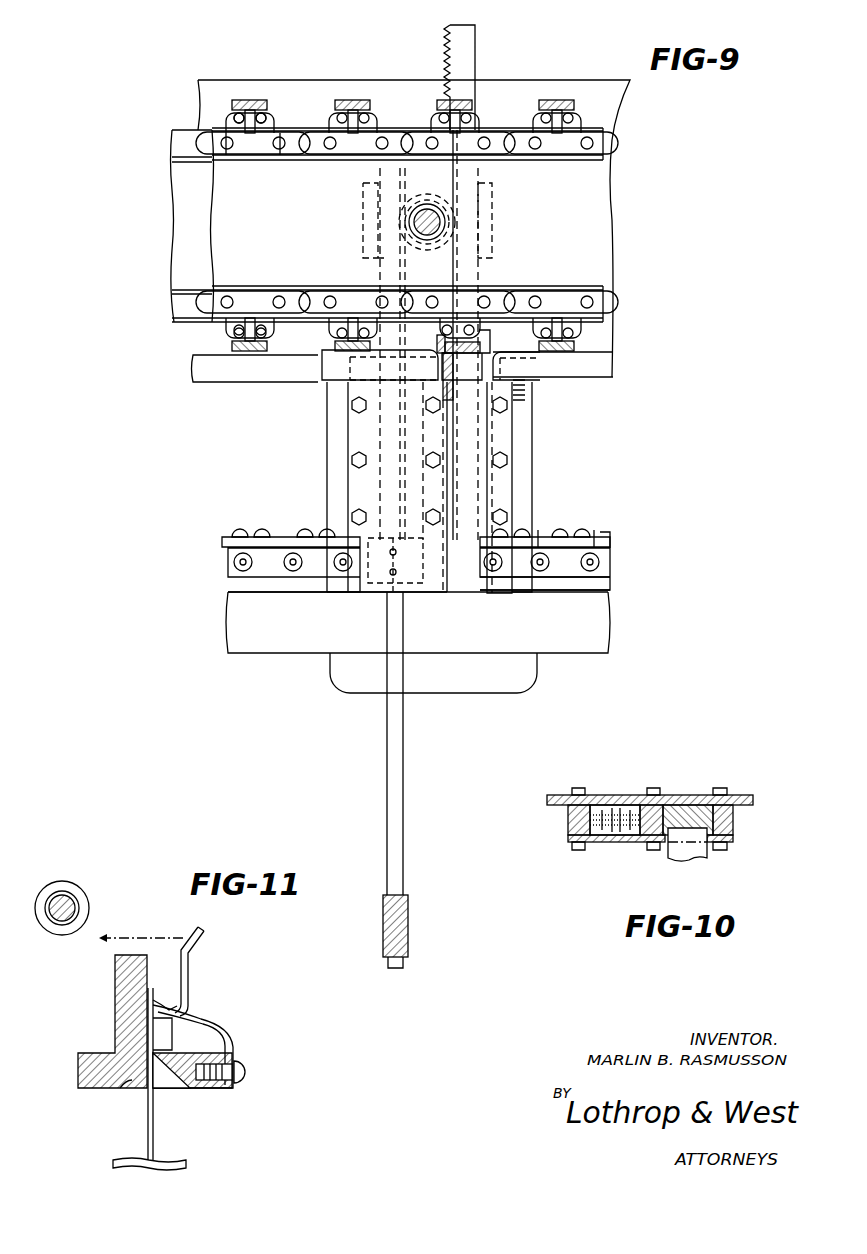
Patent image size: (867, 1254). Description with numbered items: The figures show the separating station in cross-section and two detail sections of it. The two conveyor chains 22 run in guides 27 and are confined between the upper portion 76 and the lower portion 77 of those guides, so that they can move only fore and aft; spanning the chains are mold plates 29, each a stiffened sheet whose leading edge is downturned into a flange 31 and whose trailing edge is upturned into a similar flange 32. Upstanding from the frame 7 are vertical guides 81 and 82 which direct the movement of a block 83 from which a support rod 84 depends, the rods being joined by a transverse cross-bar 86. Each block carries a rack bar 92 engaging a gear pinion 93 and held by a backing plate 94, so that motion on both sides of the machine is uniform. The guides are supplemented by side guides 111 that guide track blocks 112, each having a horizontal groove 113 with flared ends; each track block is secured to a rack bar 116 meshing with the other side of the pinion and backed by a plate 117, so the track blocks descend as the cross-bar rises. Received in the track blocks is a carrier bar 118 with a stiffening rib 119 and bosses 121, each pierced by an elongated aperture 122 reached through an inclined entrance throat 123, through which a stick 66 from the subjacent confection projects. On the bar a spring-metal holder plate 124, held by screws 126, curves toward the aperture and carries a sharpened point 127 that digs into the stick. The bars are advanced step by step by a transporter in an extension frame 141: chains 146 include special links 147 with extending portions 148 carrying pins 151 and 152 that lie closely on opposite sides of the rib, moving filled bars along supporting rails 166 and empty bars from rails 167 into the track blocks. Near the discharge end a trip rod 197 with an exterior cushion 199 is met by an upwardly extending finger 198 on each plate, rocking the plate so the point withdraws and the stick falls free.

In FIG. 10, the frame 7 is at (752, 797).
In FIG. 9, the conveyor chains 22 is at (232, 560).
In FIG. 9, the guides 27 is at (608, 648).
In FIG. 9, the mold plate 29 is at (272, 538).
In FIG. 9, the flange 31 is at (543, 530).
In FIG. 9, the flange 32 is at (598, 536).
In FIG. 11, the stick 66 is at (154, 1130).
In FIG. 9, the upper portion 76 is at (604, 538).
In FIG. 9, the lower portion 77 is at (608, 588).
In FIG. 9, the vertical guide 81 is at (358, 438).
In FIG. 10, the vertical guide 81 is at (567, 826).
In FIG. 9, the vertical guide 82 is at (440, 445).
In FIG. 10, the vertical guide 82 is at (642, 812).
In FIG. 9, the block 83 is at (378, 588).
In FIG. 9, the support rod 84 is at (387, 774).
In FIG. 9, the cross-bar 86 is at (384, 932).
In FIG. 9, the rack bar 92 is at (380, 265).
In FIG. 9, the gear pinion 93 is at (427, 204).
In FIG. 9, the backing plate 94 is at (364, 220).
In FIG. 9, the side guide 111 is at (495, 447).
In FIG. 10, the side guide 111 is at (733, 823).
In FIG. 9, the track block 112 is at (480, 338).
In FIG. 10, the track block 112 is at (694, 806).
In FIG. 9, the horizontal groove 113 is at (447, 352).
In FIG. 9, the rack bar 116 is at (473, 62).
In FIG. 9, the plate 117 is at (488, 237).
In FIG. 9, the carrier bar 118 is at (246, 100).
In FIG. 10, the carrier bar 118 is at (692, 852).
In FIG. 11, the carrier bar 118 is at (110, 1004).
In FIG. 11, the stiffening rib 119 is at (120, 958).
In FIG. 11, the boss 121 is at (162, 1034).
In FIG. 11, the aperture 122 is at (150, 1056).
In FIG. 11, the entrance throat 123 is at (128, 1088).
In FIG. 11, the holder plate 124 is at (234, 1044).
In FIG. 11, the screw 126 is at (247, 1076).
In FIG. 11, the sharpened point 127 is at (160, 1004).
In FIG. 9, the extension frame 141 is at (622, 106).
In FIG. 9, the chain 146 is at (580, 145).
In FIG. 9, the special link 147 is at (258, 152).
In FIG. 9, the extending portion 148 is at (284, 134).
In FIG. 9, the pin 151 is at (266, 120).
In FIG. 9, the pin 152 is at (238, 112).
In FIG. 9, the supporting rail 166 is at (258, 375).
In FIG. 9, the supporting rail 167 is at (598, 374).
In FIG. 11, the trip rod 197 is at (74, 906).
In FIG. 11, the finger 198 is at (202, 936).
In FIG. 11, the cushion 199 is at (88, 912).